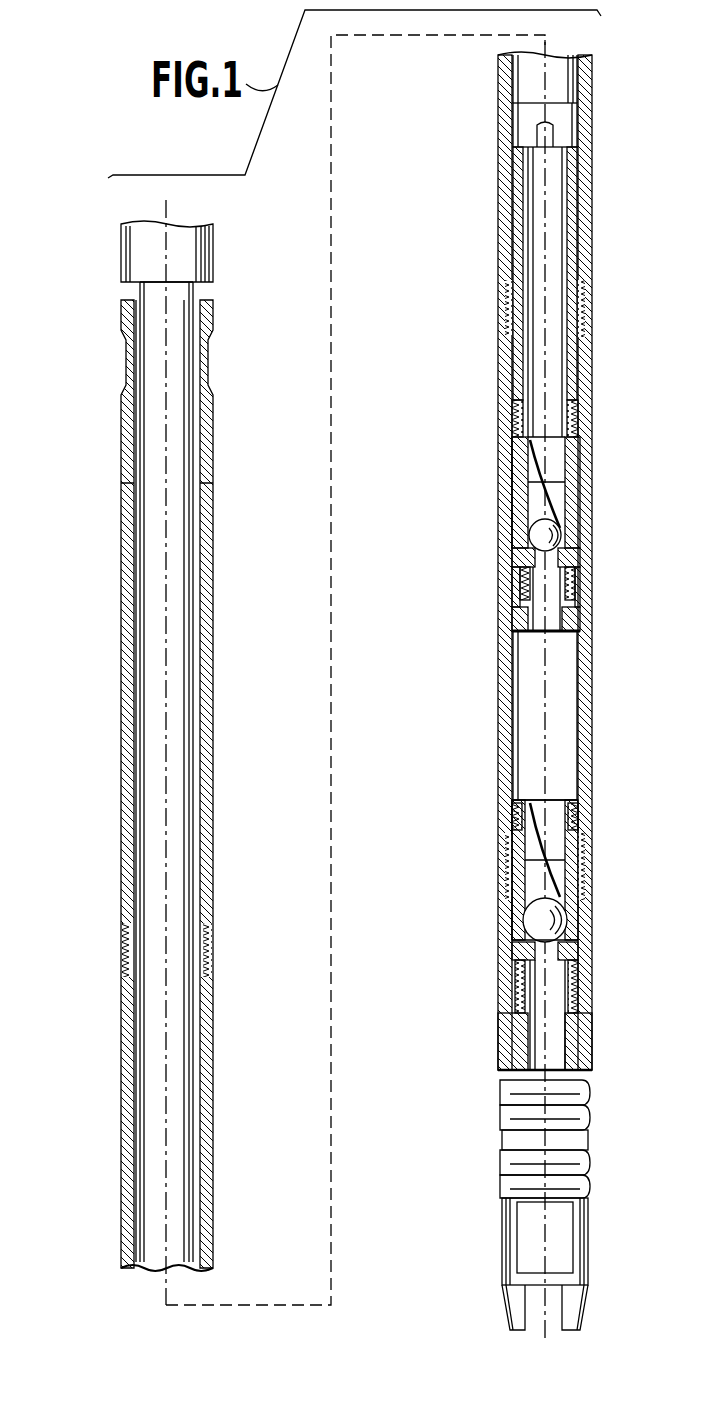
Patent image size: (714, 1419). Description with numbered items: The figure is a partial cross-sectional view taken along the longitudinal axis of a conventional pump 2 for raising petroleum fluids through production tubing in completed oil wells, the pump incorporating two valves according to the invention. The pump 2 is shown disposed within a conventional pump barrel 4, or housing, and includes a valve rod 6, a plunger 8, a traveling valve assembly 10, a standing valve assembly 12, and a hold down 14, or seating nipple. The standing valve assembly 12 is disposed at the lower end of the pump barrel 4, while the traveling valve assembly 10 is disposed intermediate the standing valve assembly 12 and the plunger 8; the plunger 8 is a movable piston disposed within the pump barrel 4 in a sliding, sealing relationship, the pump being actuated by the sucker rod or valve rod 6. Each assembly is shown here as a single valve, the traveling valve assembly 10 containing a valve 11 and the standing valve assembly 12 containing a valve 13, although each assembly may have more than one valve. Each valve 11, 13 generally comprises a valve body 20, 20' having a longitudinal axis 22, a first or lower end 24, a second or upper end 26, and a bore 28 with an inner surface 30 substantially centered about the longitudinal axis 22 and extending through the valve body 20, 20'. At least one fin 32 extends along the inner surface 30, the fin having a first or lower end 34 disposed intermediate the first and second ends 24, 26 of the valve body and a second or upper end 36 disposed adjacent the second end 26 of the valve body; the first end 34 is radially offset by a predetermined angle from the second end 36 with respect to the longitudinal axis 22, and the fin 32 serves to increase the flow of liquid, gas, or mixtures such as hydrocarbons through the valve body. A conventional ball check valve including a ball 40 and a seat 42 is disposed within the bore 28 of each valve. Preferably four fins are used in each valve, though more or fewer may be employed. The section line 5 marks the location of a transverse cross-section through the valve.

The pump 2 is at (98, 422).
The pump barrel 4 is at (214, 668).
The valve rod 6 is at (133, 795).
The plunger 8 is at (562, 174).
The traveling valve assembly 10 is at (603, 453).
The valve 11 is at (583, 477).
The standing valve assembly 12 is at (597, 820).
The valve 13 is at (585, 845).
The hold down 14 is at (506, 1042).
The valve body 20 is at (599, 1007).
The valve body 20' is at (591, 582).
The longitudinal axis 22 is at (547, 307).
The first end 24 is at (585, 590).
The second end 26 is at (583, 415).
The bore 28 is at (527, 490).
The inner surface 30 is at (515, 517).
The fin 32 is at (530, 455).
The first end 34 is at (562, 528).
The second end 36 is at (515, 420).
The ball 40 is at (530, 545).
The seat 42 is at (515, 560).
The section line 5- 5 is at (545, 740).